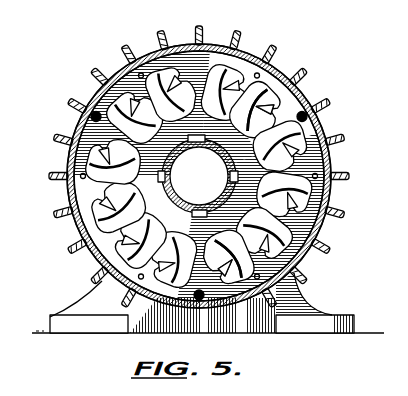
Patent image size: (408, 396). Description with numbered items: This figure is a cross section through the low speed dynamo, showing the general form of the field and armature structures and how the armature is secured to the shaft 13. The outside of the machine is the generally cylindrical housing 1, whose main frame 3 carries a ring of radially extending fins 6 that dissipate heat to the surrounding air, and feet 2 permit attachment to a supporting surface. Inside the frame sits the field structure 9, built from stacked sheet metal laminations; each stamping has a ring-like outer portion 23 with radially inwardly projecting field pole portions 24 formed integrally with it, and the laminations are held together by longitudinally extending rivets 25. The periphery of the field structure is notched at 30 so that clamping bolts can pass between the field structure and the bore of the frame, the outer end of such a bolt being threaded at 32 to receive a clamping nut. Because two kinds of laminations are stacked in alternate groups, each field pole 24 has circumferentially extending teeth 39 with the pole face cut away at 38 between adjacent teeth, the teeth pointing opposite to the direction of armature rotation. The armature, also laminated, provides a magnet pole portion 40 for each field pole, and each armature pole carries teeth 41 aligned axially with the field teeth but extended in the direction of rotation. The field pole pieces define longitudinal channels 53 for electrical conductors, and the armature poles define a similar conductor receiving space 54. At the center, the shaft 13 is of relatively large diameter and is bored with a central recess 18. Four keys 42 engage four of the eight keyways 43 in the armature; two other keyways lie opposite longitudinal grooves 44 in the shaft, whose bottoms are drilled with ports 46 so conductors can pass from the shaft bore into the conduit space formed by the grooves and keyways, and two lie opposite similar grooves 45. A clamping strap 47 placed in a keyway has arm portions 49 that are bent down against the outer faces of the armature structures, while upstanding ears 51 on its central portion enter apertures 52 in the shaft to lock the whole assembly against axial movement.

The housing 1 is at (258, 46).
The feet 2 is at (327, 317).
The main frame 3 is at (197, 163).
The radially extending fins 6 is at (339, 231).
The field structure 9 is at (228, 183).
The shaft 13 is at (199, 176).
The central recess 18 is at (208, 197).
The ring-like outer portion 23 is at (193, 161).
The field pole portions 24 is at (359, 185).
The rivets 25 is at (353, 166).
The notches 30 is at (228, 155).
The threaded outer end 32 is at (214, 322).
The cut-away pole face 38 is at (189, 157).
The circumferentially extending teeth 39 is at (263, 234).
The armature magnet pole portion 40 is at (283, 195).
The armature teeth 41 is at (225, 258).
The keys 42 is at (198, 175).
The keyways 43 is at (116, 162).
The grooves 44 is at (199, 176).
The grooves 45 is at (194, 129).
The ports 46 is at (176, 174).
The clamping strap 47 is at (199, 175).
The arm portions 49 is at (243, 159).
The upstanding ears 51 is at (226, 132).
The apertures 52 is at (199, 176).
The channel 53 is at (228, 176).
The conductor receiving space 54 is at (286, 97).